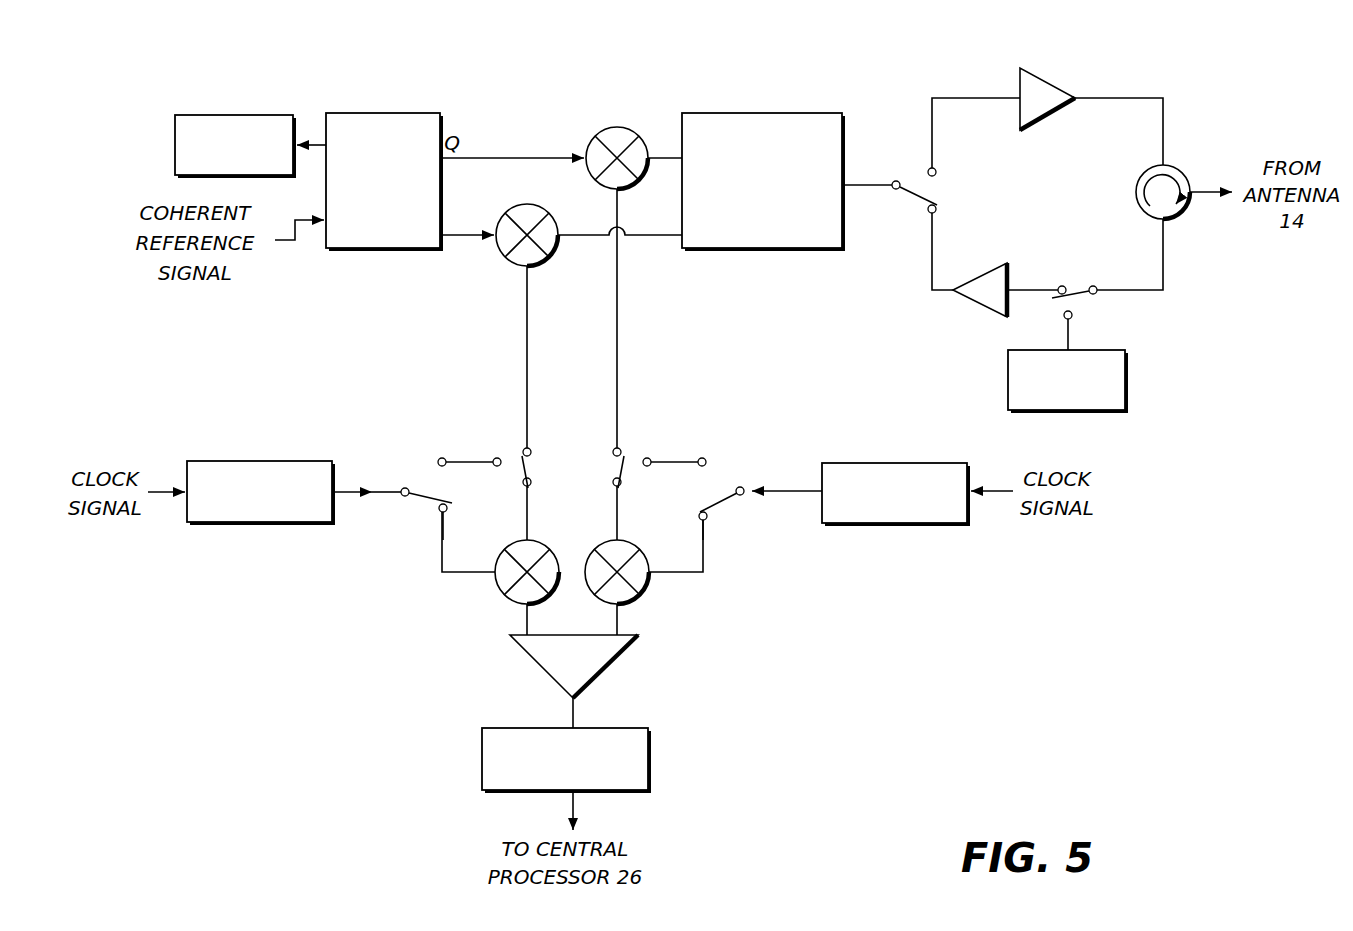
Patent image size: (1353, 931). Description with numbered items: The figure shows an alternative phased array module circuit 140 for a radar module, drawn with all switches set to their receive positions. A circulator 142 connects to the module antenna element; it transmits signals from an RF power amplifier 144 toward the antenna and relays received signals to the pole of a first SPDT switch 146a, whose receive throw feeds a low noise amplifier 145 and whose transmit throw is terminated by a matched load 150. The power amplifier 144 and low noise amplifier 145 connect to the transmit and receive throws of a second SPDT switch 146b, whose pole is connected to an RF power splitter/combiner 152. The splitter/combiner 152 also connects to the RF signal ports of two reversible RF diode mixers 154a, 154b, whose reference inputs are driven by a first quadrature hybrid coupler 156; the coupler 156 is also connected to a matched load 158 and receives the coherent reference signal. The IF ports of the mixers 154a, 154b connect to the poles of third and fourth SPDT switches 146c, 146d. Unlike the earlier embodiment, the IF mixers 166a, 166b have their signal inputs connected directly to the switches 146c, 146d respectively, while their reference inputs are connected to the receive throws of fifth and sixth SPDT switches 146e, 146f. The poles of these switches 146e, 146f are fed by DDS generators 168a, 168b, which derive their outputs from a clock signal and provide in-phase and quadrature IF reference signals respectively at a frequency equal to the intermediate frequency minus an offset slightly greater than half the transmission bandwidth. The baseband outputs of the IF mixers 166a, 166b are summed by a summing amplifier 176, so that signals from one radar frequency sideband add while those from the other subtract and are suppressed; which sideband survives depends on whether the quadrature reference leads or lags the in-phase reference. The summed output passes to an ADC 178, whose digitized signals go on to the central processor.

The phased array module circuit 140 is at (1072, 560).
The circulator 142 is at (1141, 177).
The RF power amplifier 144 is at (1046, 73).
The low noise amplifier 145 is at (982, 312).
The first SPDT switch 146a is at (1072, 303).
The second SPDT switch 146b is at (935, 193).
The third SPDT switch 146c is at (522, 460).
The fourth SPDT switch 146d is at (622, 460).
The fifth SPDT switch 146e is at (423, 498).
The sixth SPDT switch 146f is at (723, 500).
The matched load 150 is at (1128, 388).
The RF power splitter/combiner 152 is at (757, 112).
The RF mixer 154a is at (510, 208).
The RF mixer 154b is at (612, 127).
The first quadrature hybrid coupler 156 is at (393, 112).
The matched load 158 is at (243, 112).
The IF mixer 166a is at (500, 588).
The IF mixer 166b is at (645, 588).
The DDS generator 168a is at (262, 522).
The DDS generator 168b is at (897, 523).
The summing amplifier 176 is at (610, 668).
The ADC 178 is at (651, 750).